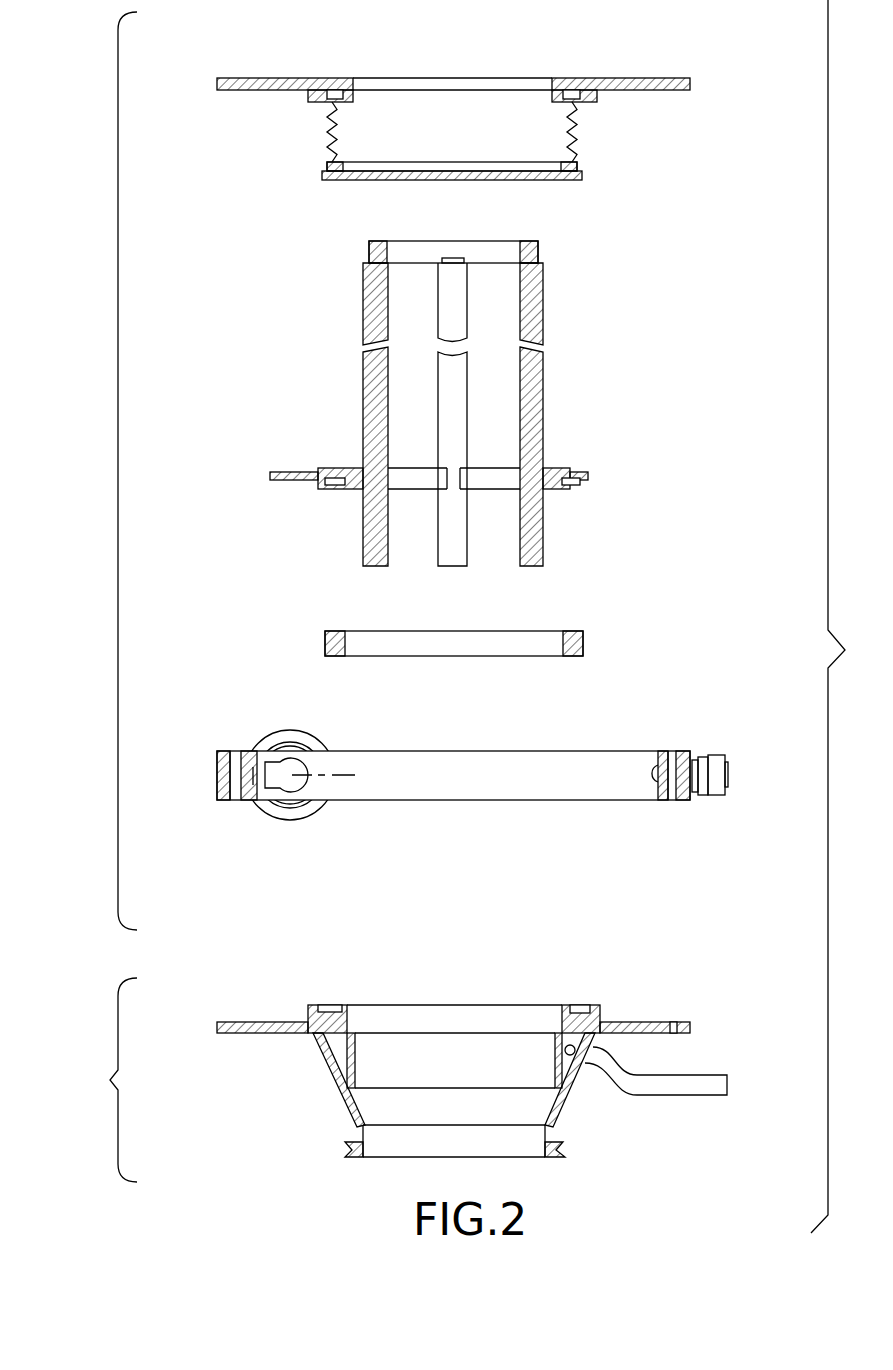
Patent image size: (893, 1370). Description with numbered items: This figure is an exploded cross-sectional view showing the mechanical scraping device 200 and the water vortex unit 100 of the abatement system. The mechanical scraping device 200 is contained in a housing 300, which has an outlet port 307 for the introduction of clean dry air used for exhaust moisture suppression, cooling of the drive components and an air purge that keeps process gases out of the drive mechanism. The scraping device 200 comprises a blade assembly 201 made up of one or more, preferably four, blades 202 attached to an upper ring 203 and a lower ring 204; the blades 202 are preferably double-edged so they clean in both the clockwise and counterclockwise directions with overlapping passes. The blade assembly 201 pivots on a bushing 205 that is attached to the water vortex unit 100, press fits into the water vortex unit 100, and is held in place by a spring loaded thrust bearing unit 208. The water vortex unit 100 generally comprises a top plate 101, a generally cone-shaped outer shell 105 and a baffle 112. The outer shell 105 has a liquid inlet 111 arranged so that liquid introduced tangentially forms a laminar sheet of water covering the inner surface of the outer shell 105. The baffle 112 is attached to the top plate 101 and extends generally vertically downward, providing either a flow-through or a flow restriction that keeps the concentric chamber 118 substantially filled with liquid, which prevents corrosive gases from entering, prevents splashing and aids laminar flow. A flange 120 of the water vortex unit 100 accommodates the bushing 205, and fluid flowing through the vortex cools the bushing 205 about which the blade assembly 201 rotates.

The water vortex unit 100 is at (110, 1080).
The top plate 101 is at (690, 1022).
The outer shell 105 is at (555, 1113).
The liquid inlet 111 is at (720, 1075).
The baffle 112 is at (555, 1057).
The concentric chamber 118 is at (330, 1067).
The flange 120 is at (308, 1003).
The mechanical scraping device 200 is at (116, 470).
The blade assembly 201 is at (613, 372).
The blades 202 is at (368, 565).
The upper ring 203 is at (540, 241).
The lower ring 204 is at (590, 468).
The bushing 205 is at (585, 640).
The spring loaded thrust bearing unit 208 is at (712, 72).
The housing 300 is at (214, 766).
The outlet port 307 is at (717, 805).